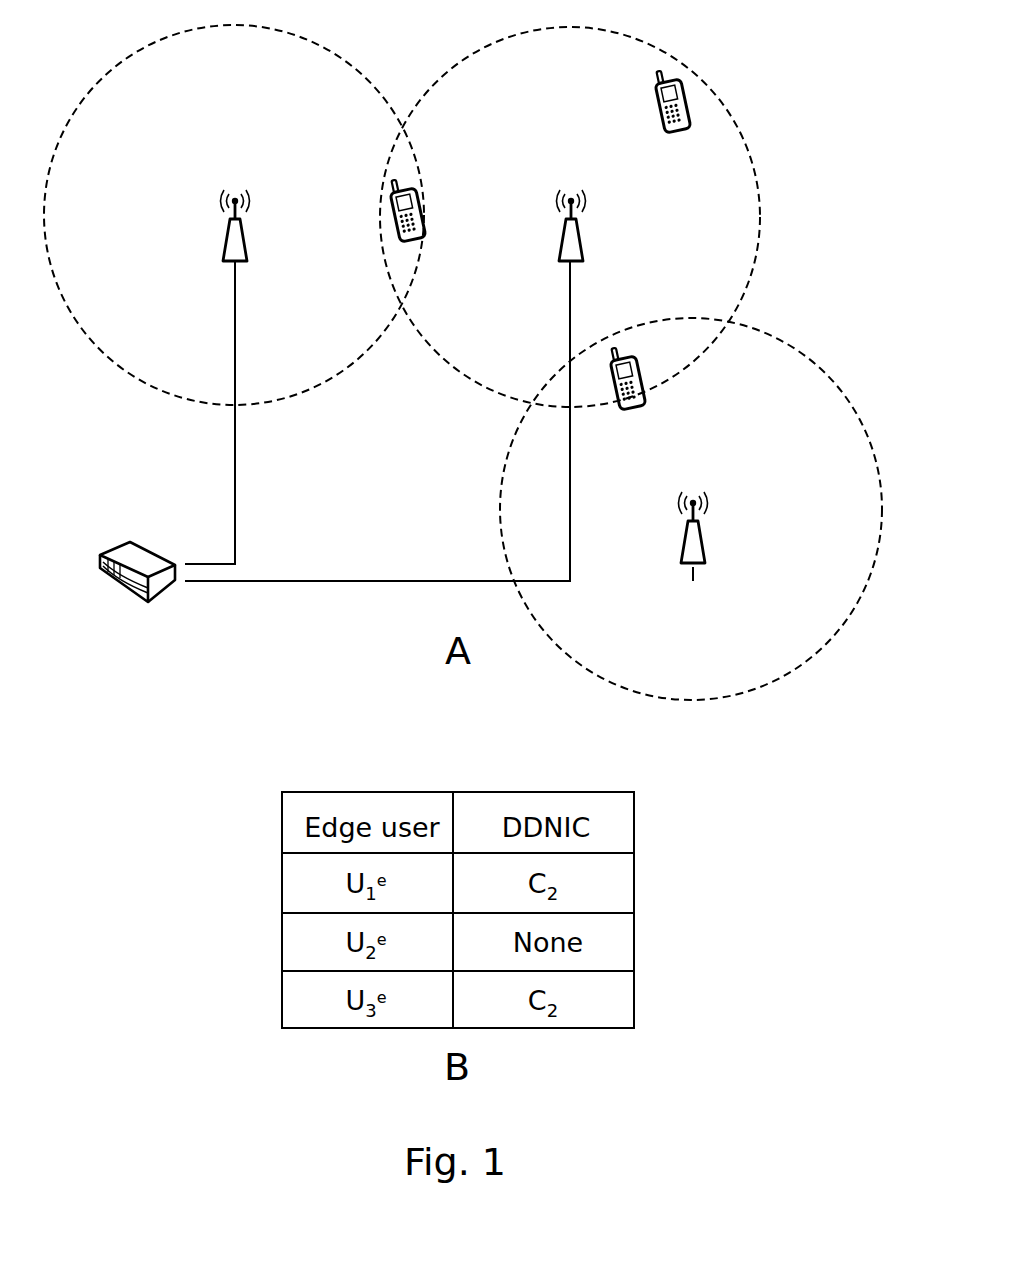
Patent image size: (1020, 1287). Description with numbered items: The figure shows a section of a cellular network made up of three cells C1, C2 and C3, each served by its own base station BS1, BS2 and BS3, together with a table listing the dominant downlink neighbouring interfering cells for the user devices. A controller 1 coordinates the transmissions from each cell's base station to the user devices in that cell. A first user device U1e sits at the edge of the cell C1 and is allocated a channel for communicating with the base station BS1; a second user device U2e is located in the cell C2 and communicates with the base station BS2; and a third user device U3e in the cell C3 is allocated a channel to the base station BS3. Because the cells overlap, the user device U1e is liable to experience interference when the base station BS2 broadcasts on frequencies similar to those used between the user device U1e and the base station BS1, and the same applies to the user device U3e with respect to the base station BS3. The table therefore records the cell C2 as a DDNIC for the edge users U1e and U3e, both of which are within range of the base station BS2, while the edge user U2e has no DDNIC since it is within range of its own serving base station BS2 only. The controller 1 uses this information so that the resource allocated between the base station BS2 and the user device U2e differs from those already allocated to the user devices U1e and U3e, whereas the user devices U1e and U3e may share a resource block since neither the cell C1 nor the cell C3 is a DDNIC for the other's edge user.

The controller 1 is at (136, 543).
The first cell C1 is at (312, 38).
The second cell C2 is at (630, 38).
The third cell C3 is at (797, 350).
The first base station BS1 is at (248, 251).
The second base station BS2 is at (583, 249).
The third base station BS3 is at (706, 551).
The first user device U1e is at (416, 182).
The second user device U2e is at (683, 82).
The third user device U3e is at (640, 362).